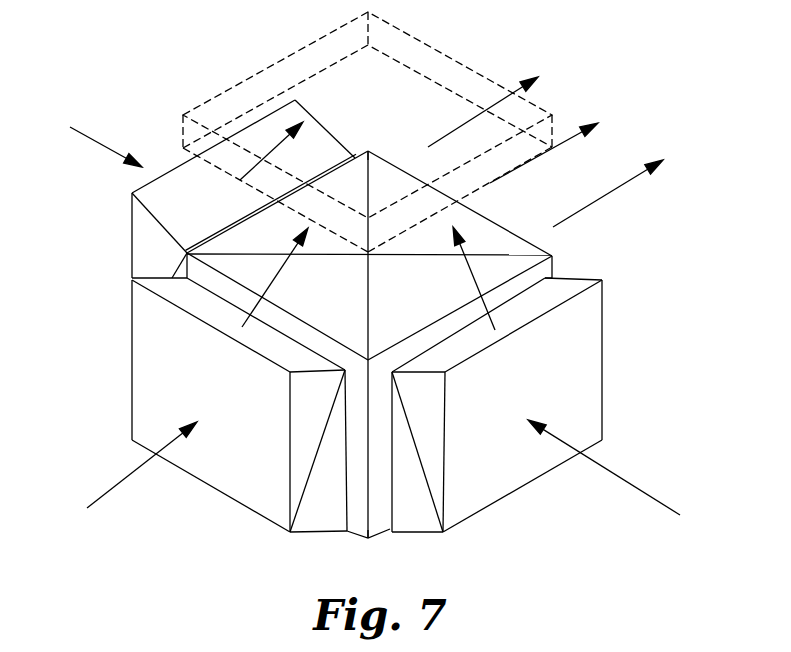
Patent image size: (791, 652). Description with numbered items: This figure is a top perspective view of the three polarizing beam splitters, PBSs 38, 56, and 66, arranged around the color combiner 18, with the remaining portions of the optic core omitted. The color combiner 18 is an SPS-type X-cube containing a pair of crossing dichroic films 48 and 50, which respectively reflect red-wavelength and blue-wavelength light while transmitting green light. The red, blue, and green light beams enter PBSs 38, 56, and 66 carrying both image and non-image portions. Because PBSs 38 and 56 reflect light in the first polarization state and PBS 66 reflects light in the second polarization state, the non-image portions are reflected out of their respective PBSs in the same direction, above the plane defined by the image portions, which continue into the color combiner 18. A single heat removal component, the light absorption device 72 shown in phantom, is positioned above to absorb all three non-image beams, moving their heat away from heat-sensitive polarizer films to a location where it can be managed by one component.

The color combiner 18 is at (355, 512).
The PBS 38 is at (587, 347).
The dichroic film 48 is at (371, 167).
The dichroic film 50 is at (520, 254).
The PBS 56 is at (148, 245).
The PBS 66 is at (148, 352).
The light absorption device 72 is at (428, 37).